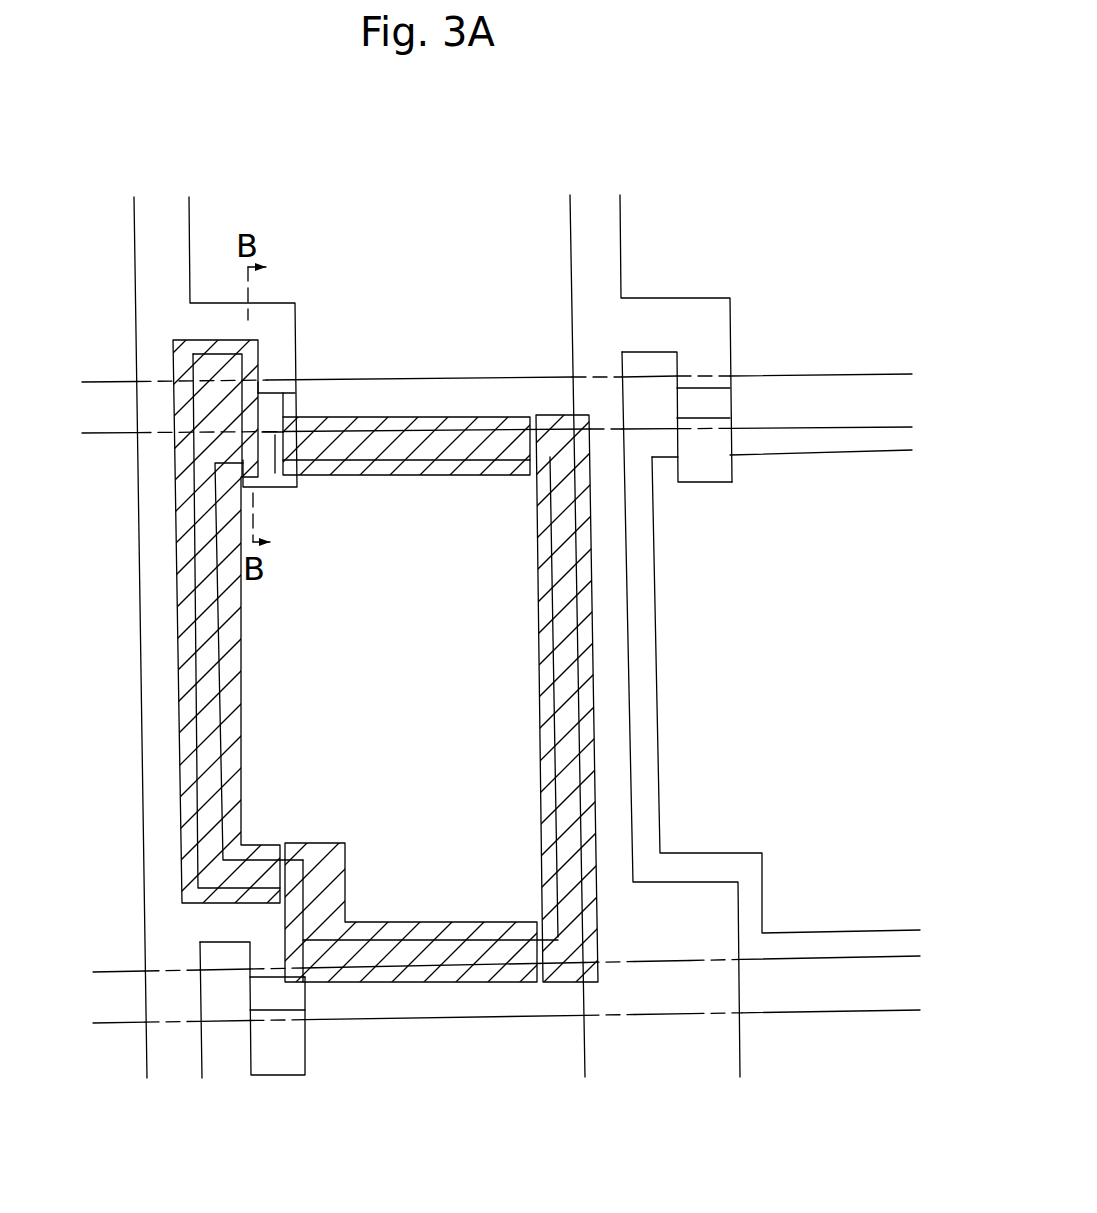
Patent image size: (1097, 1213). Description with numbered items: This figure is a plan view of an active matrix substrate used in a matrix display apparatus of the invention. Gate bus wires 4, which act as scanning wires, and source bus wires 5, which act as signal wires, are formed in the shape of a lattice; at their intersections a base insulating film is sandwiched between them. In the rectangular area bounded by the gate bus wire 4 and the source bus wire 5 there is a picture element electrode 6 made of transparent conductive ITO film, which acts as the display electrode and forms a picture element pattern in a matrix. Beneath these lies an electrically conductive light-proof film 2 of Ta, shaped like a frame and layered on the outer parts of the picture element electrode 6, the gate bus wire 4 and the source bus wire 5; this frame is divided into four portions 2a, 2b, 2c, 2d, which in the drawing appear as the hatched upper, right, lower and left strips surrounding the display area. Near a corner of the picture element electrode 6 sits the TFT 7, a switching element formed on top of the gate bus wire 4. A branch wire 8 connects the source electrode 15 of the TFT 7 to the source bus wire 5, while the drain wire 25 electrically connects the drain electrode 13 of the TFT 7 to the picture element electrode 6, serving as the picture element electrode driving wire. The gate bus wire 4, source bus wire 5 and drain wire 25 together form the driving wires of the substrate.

The electrically conductive light-proof film 2 is at (548, 710).
The portion of conductive light-proof film 2a is at (438, 440).
The portion of conductive light-proof film 2b is at (572, 700).
The portion of conductive light-proof film 2c is at (438, 985).
The portion of conductive light-proof film 2d is at (205, 604).
The gate bus wire 4 is at (118, 403).
The source bus wire 5 is at (165, 210).
The picture element electrode 6 is at (427, 651).
The TFT 7 is at (284, 404).
The branch wire 8 is at (216, 320).
The drain electrode 13 is at (270, 432).
The source electrode 15 is at (266, 384).
The drain wire 25 is at (271, 458).